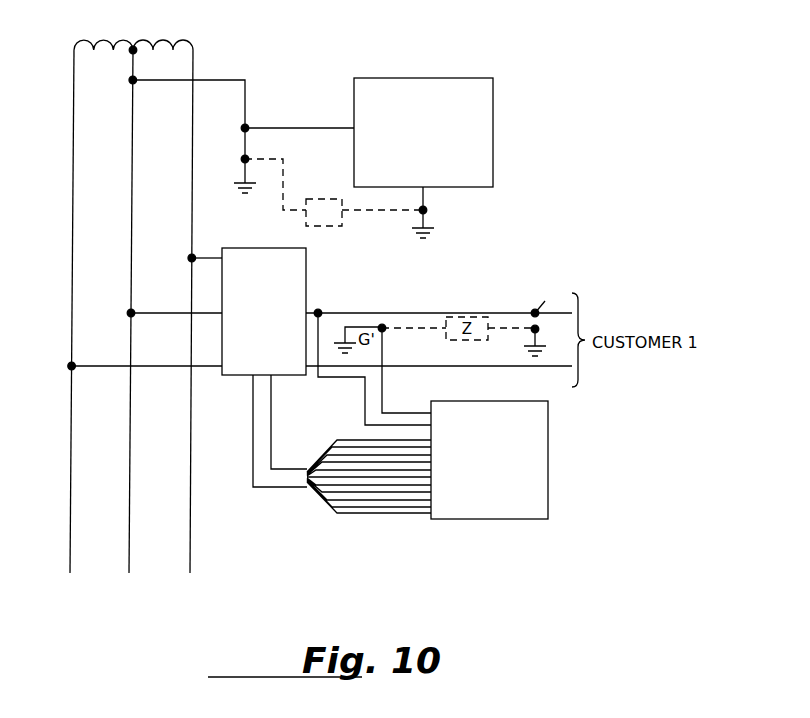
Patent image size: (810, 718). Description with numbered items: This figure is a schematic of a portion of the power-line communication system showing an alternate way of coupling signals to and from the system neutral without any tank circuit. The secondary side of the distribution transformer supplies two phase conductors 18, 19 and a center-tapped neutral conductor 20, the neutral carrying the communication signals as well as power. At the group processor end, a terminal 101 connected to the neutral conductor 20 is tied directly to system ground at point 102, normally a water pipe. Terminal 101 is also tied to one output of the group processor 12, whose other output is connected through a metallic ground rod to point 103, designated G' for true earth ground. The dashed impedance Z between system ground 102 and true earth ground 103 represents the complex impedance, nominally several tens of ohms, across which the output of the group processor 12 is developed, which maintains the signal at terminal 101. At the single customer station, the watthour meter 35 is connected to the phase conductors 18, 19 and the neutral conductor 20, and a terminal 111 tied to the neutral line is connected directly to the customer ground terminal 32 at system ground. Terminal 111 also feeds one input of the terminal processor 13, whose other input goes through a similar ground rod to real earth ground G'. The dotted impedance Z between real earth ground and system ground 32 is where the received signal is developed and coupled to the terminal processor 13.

The phase conductor 18 is at (74, 172).
The neutral conductor 20 is at (130, 173).
The phase conductor 19 is at (193, 172).
The terminal 101 is at (247, 126).
The system ground point 102 is at (247, 158).
The true earth ground point 103 is at (420, 212).
The group processor 12 is at (485, 92).
The watthour meter 35 is at (295, 268).
The terminal 111 is at (318, 310).
The customer ground terminal 32 is at (536, 328).
The terminal processor 13 is at (533, 425).